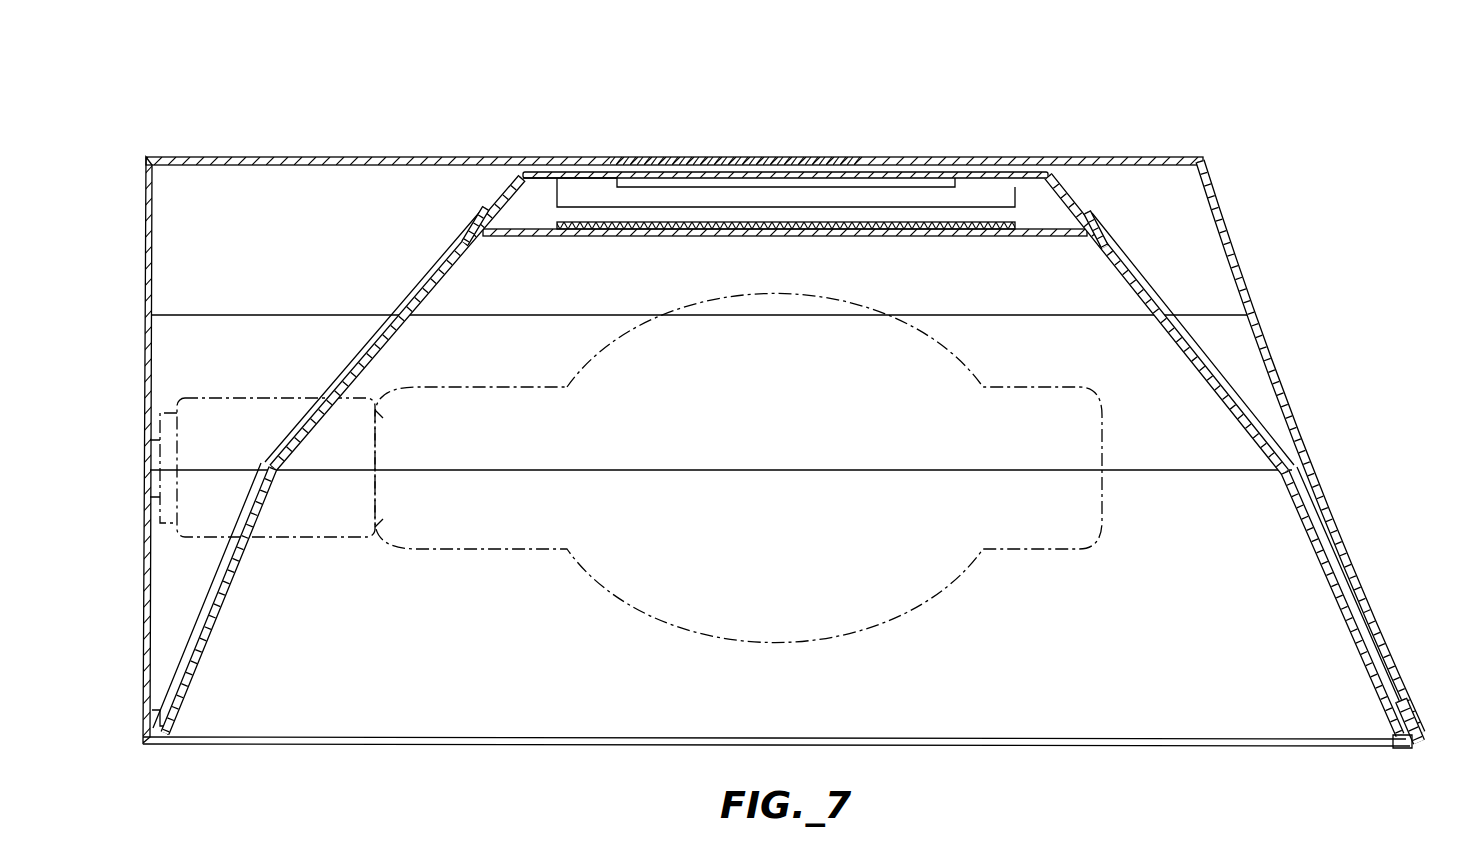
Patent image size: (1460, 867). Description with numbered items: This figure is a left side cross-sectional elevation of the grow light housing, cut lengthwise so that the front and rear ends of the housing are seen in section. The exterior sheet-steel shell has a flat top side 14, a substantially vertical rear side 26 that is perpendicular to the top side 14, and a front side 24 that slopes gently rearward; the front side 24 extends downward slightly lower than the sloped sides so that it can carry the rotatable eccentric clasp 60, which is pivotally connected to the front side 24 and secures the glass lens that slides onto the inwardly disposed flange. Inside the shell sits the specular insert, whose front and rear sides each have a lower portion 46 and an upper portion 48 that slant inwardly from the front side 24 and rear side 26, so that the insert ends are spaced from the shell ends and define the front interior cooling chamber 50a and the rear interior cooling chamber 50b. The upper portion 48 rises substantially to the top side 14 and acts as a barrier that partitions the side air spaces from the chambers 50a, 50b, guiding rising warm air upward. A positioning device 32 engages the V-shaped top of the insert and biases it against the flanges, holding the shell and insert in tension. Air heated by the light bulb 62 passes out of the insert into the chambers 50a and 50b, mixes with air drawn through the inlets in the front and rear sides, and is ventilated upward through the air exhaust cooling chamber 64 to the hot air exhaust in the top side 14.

The top side 14 is at (400, 157).
The rear side 26 is at (140, 168).
The rear interior cooling chamber 50b is at (243, 177).
The front interior cooling chamber 50a is at (1145, 187).
The front side 24 is at (1245, 270).
The positioning device 32 is at (582, 195).
The air exhaust cooling chamber 64 is at (882, 185).
The upper portion 48 is at (467, 260).
The lower portion 46 is at (230, 613).
The rotatable eccentric clasp 60 is at (1415, 720).
The light bulb 62 is at (1407, 748).